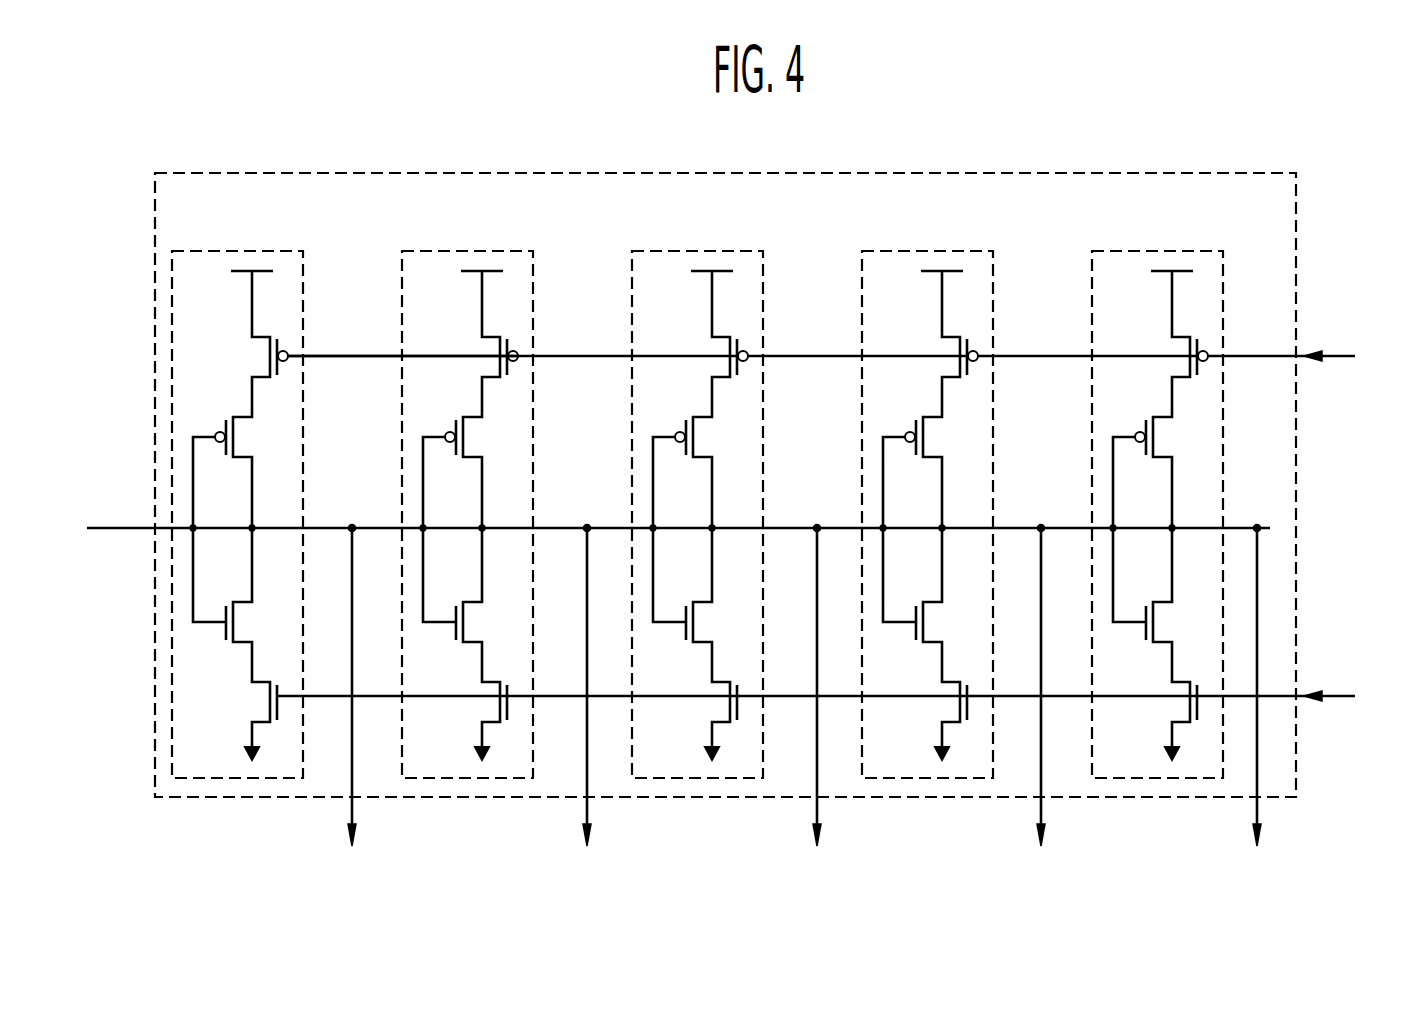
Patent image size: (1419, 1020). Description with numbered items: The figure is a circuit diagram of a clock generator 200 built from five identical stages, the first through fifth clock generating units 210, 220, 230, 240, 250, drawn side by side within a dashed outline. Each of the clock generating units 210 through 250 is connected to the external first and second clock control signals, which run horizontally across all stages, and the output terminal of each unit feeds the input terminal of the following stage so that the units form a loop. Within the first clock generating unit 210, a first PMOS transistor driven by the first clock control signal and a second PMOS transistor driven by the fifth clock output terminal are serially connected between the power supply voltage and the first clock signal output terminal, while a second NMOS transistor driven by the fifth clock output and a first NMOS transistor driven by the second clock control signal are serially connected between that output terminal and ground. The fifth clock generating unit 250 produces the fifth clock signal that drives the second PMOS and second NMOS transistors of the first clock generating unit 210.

The clock generator 200 is at (1296, 272).
The first clock generating unit 210 is at (240, 251).
The second clock generating unit 220 is at (470, 251).
The third clock generating unit 230 is at (700, 251).
The fourth clock generating unit 240 is at (930, 251).
The fifth clock generating unit 250 is at (1160, 251).